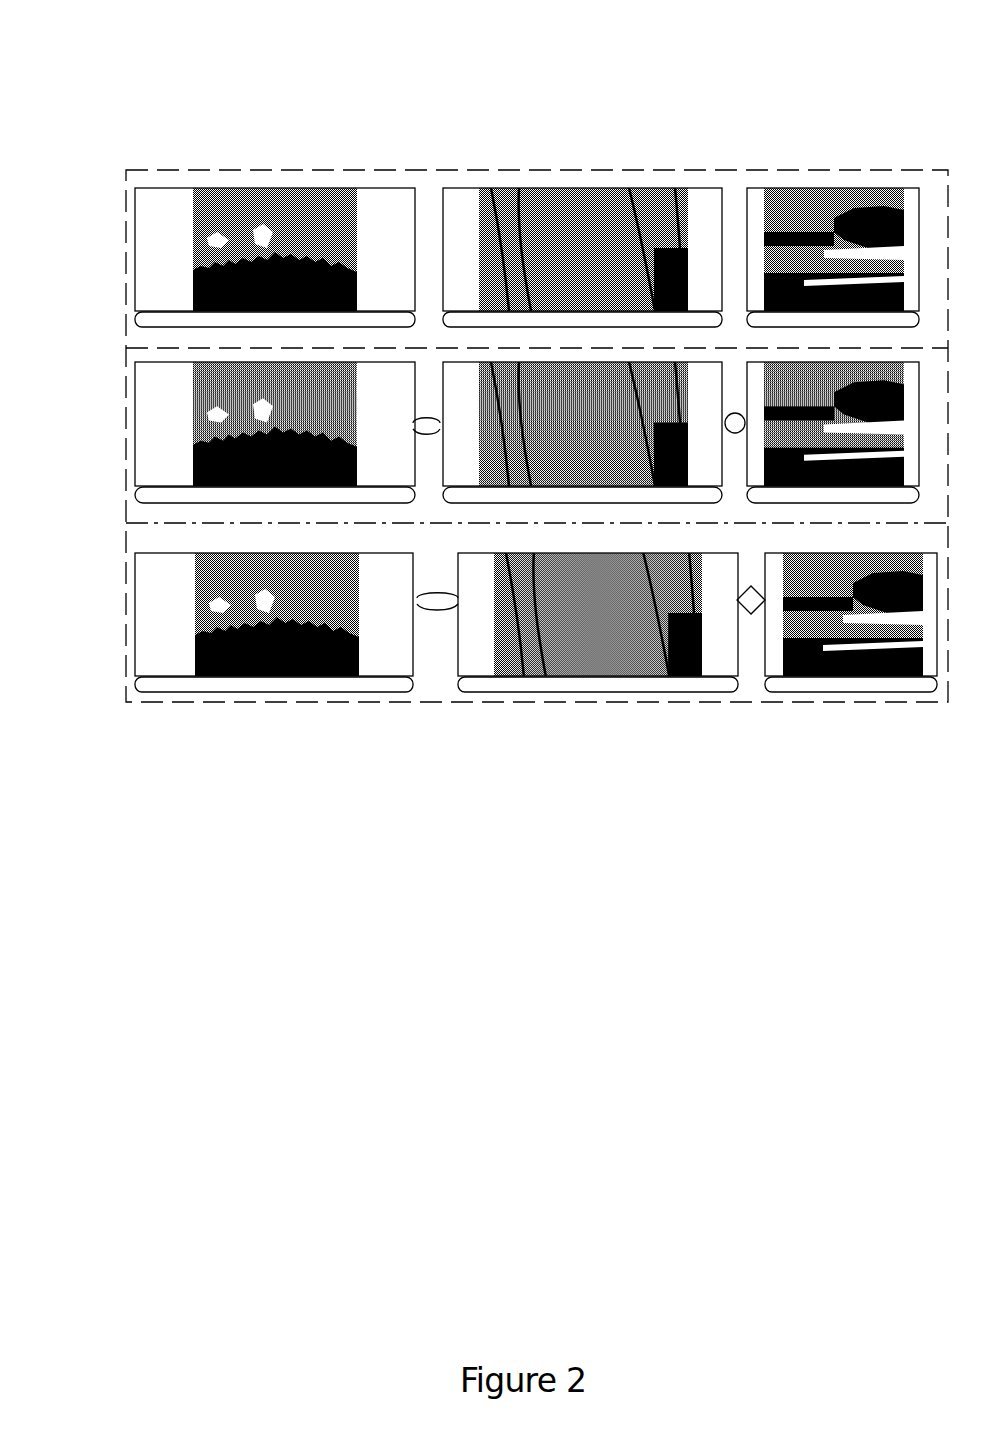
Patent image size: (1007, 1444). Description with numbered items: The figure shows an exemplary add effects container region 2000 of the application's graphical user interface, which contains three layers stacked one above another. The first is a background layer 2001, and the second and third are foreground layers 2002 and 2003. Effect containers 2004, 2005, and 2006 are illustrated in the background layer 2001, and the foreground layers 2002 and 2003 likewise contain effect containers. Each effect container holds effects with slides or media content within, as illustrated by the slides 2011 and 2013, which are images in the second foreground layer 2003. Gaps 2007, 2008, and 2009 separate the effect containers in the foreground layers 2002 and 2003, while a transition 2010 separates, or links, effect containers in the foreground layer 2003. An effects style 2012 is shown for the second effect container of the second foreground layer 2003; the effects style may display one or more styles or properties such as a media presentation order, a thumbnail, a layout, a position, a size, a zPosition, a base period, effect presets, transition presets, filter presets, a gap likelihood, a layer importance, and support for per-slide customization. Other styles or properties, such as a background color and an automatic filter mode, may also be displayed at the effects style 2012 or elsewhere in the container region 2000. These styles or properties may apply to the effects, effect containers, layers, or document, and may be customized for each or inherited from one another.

The add effects container region 2000 is at (103, 84).
The background layer 2001 is at (485, 225).
The foreground layer 2002 is at (485, 414).
The foreground layer 2003 is at (495, 621).
The effect container 2004 is at (280, 188).
The effect container 2005 is at (577, 190).
The effect container 2006 is at (835, 190).
The gap 2007 is at (427, 426).
The gap 2008 is at (736, 410).
The gap 2009 is at (425, 590).
The transition 2010 is at (748, 585).
The slide 2011 is at (265, 678).
The effects style 2012 is at (563, 692).
The slide 2013 is at (835, 678).